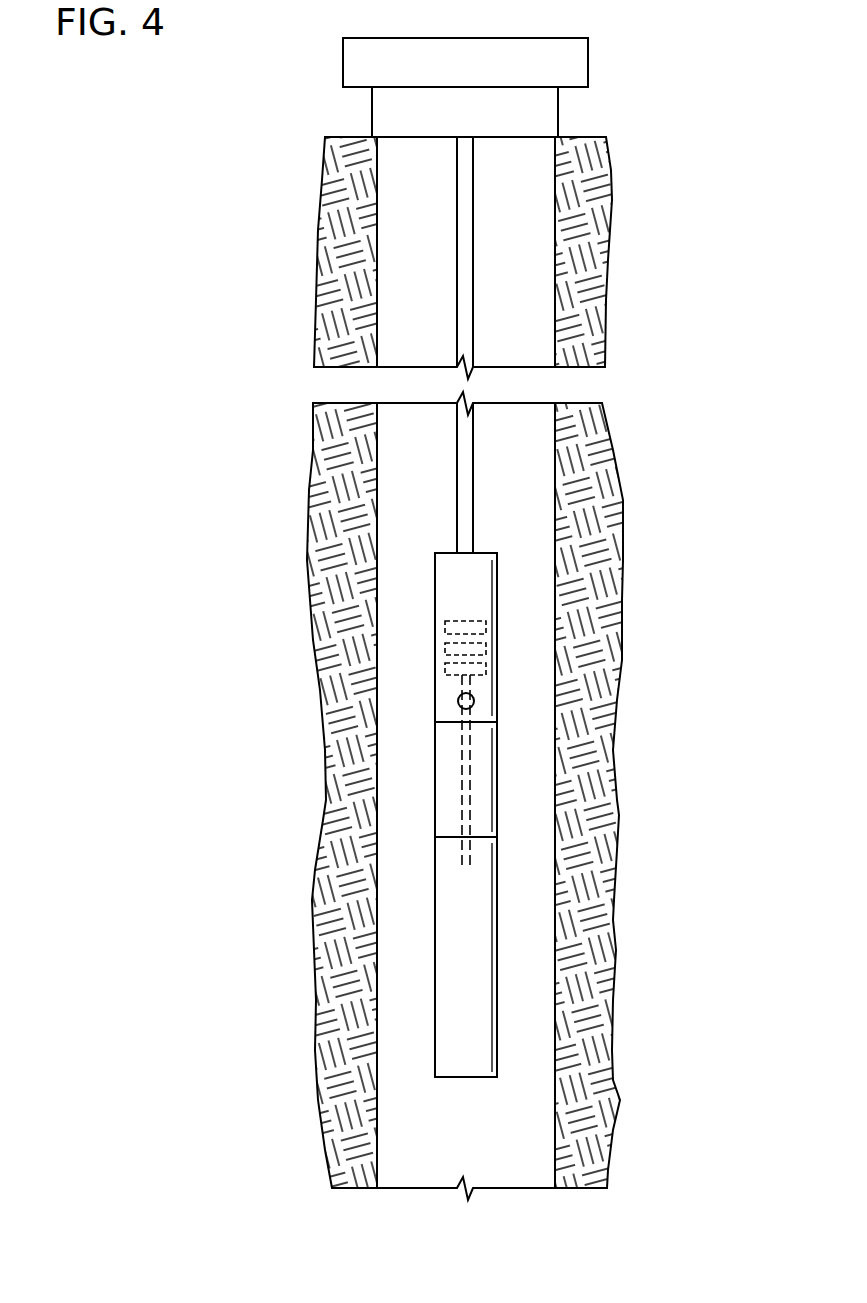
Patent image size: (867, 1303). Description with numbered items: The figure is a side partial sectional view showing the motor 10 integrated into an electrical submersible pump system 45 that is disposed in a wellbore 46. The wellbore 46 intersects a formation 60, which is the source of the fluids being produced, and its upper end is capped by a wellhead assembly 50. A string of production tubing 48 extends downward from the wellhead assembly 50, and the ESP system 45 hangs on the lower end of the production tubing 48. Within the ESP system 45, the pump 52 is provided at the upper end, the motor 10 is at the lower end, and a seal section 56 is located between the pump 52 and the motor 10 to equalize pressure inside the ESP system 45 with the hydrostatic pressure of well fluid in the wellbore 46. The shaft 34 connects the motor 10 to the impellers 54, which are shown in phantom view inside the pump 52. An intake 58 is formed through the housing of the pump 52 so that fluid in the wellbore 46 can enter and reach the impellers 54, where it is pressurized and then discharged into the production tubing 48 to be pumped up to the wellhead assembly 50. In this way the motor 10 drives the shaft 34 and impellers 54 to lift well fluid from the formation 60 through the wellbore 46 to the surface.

The motor 10 is at (435, 948).
The shaft 34 is at (462, 780).
The electrical submersible pump system 45 is at (650, 889).
The wellbore 46 is at (546, 339).
The production tubing 48 is at (480, 512).
The wellhead assembly 50 is at (608, 67).
The pump 52 is at (435, 583).
The impellers 54 is at (488, 623).
The seal section 56 is at (497, 771).
The intake 58 is at (460, 693).
The formation 60 is at (597, 1033).